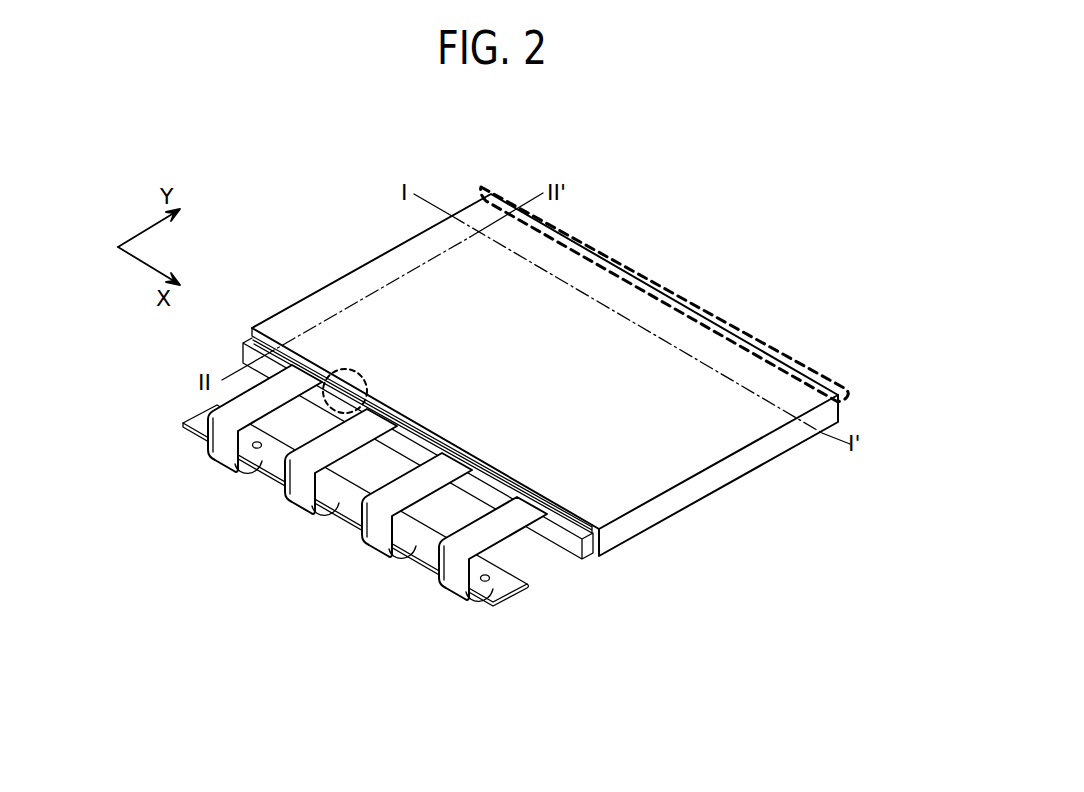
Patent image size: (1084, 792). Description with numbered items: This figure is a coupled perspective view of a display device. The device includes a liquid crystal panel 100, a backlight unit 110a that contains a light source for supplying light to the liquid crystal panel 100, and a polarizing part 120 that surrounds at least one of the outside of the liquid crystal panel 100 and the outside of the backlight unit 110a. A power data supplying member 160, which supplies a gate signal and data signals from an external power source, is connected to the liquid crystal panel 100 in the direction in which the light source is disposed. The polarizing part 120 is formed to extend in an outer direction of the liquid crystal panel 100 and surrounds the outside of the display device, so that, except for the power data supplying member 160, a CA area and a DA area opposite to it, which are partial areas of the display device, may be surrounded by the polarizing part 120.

The liquid crystal panel 100 is at (613, 525).
The polarizing part 120 is at (695, 460).
The backlight unit 110a is at (555, 547).
The power data supplying member 160 is at (494, 594).
The DA area DA is at (660, 262).
The CA area CA is at (318, 402).